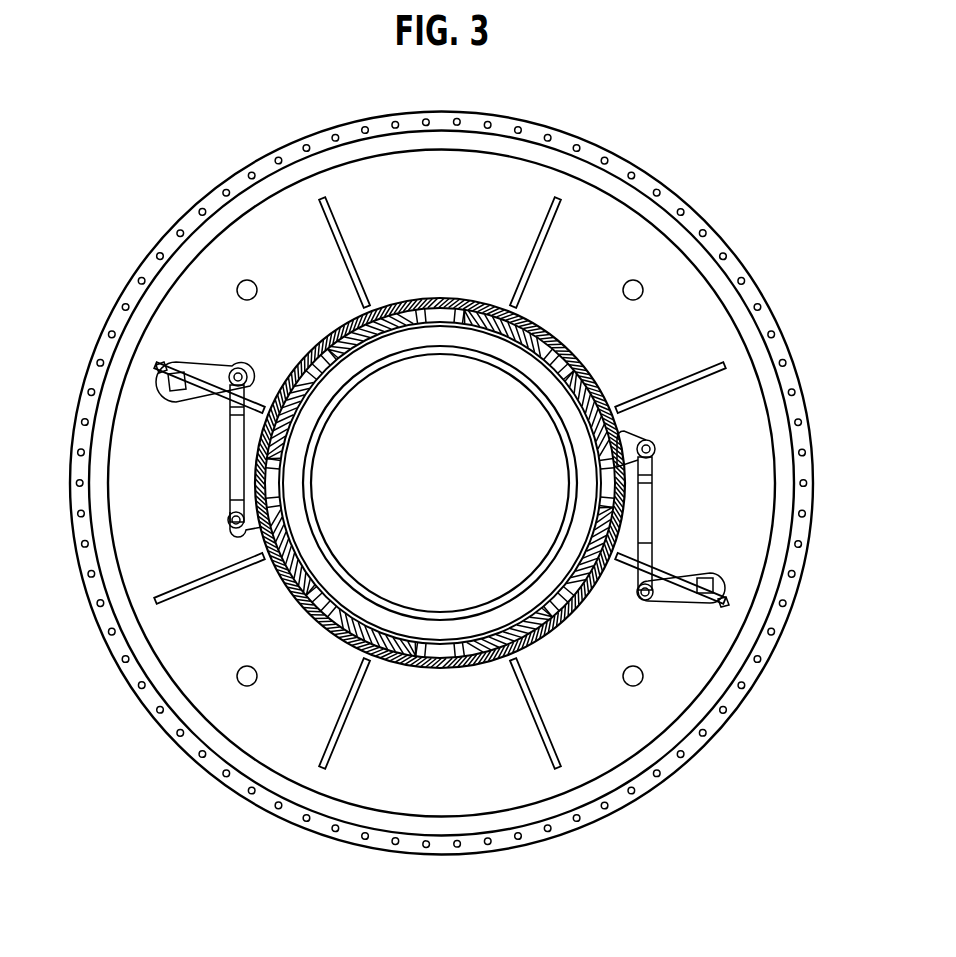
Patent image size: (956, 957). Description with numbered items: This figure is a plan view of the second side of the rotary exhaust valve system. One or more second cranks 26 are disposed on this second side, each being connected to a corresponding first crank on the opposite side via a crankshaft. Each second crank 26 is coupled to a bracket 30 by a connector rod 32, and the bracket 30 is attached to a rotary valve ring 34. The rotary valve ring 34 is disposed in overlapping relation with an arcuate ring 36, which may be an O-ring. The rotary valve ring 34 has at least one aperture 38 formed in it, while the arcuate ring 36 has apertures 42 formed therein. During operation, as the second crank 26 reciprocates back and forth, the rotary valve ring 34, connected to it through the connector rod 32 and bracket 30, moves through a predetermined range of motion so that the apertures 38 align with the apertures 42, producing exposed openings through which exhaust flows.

The second crank 26 is at (193, 370).
The bracket 30 is at (247, 537).
The connector rod 32 is at (232, 470).
The rotary valve ring 34 is at (442, 652).
The arcuate ring 36 is at (490, 667).
The aperture 38 is at (348, 330).
The aperture 42 is at (438, 312).